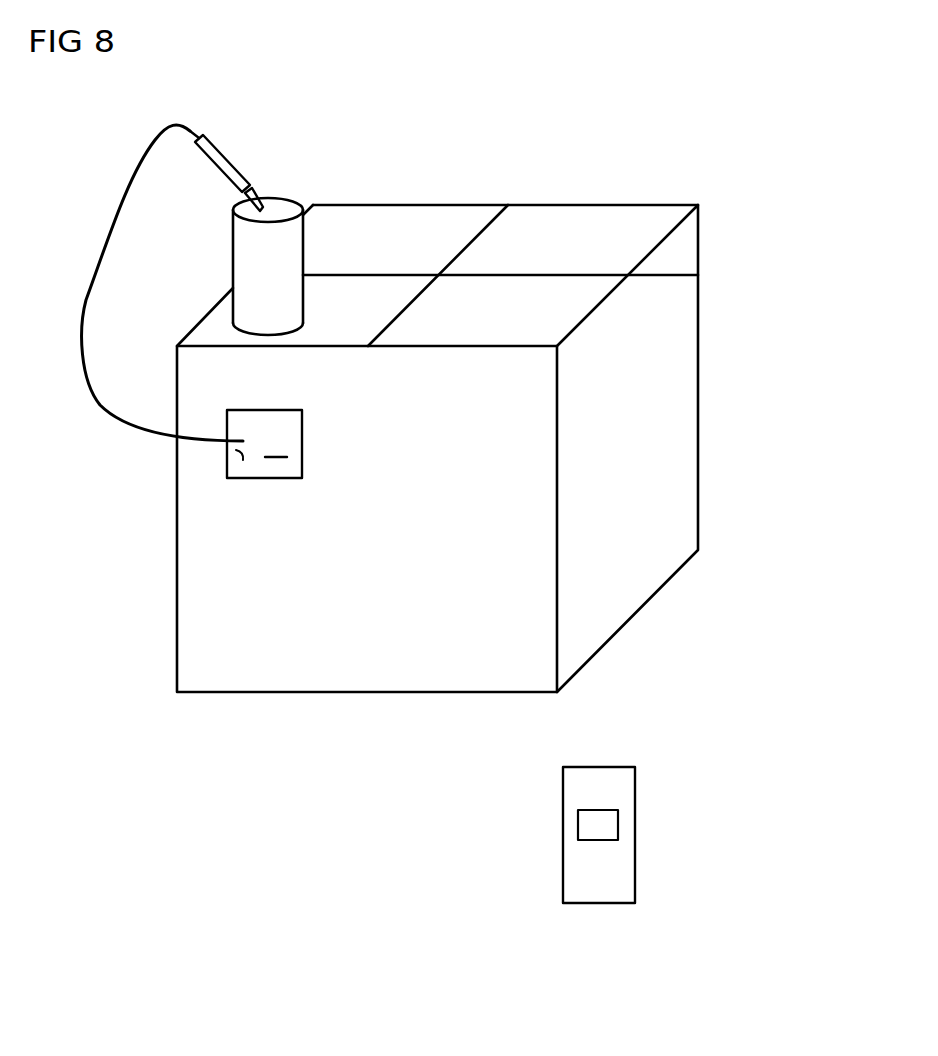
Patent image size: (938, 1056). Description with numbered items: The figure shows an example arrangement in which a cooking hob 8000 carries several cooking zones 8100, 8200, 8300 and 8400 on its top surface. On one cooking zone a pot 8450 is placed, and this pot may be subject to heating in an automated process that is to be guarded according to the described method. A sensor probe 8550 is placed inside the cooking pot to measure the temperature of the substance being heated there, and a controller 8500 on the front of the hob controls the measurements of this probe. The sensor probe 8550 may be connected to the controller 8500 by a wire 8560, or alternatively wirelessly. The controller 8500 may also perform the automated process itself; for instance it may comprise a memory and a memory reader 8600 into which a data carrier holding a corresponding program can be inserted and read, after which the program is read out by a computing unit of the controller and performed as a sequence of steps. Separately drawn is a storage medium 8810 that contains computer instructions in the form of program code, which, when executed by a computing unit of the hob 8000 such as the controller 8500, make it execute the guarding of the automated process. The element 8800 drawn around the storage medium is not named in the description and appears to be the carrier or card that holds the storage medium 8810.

The cooking hob 8000 is at (296, 707).
The cooking zone 8100 is at (378, 243).
The cooking zone 8200 is at (580, 243).
The cooking zone 8300 is at (507, 315).
The cooking zone 8400 is at (217, 332).
The pot 8450 is at (252, 245).
The controller 8500 is at (242, 457).
The sensor probe 8550 is at (222, 160).
The wire 8560 is at (118, 198).
The memory reader 8600 is at (276, 455).
The remote unit 8800 is at (618, 878).
The storage medium 8810 is at (600, 825).